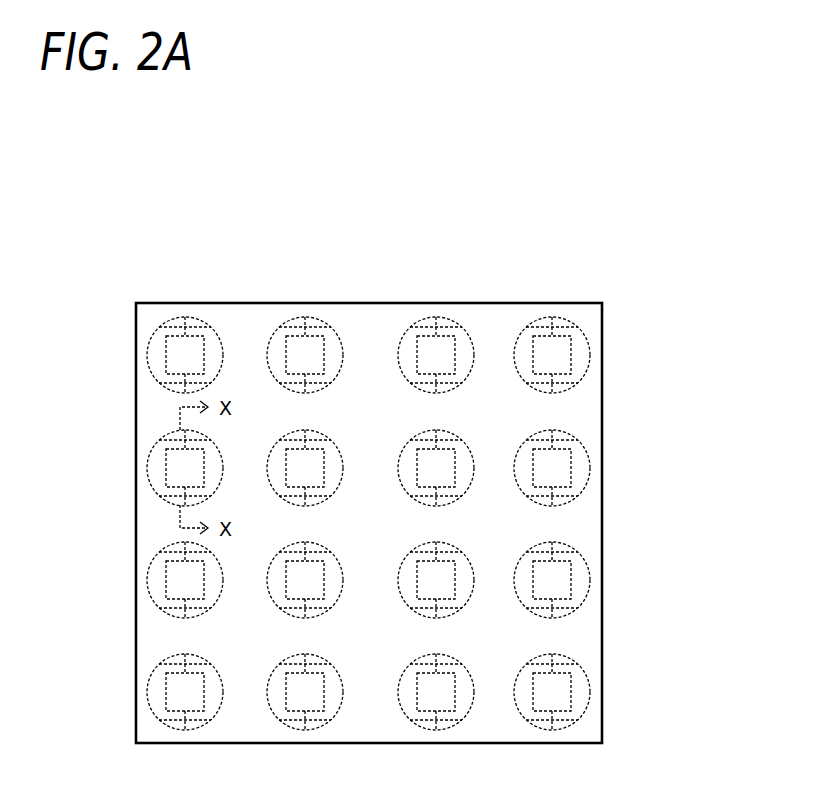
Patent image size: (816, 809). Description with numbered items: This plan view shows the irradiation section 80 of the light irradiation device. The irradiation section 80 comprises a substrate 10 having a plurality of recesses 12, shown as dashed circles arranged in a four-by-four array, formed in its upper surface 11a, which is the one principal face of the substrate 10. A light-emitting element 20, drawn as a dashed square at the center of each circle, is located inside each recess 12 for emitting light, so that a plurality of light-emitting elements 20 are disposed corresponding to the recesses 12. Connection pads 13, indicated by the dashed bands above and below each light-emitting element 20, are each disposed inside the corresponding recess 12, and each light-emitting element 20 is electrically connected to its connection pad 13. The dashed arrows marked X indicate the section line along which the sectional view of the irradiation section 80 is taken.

The substrate 10 is at (542, 302).
The upper surface 11a is at (217, 320).
The recess 12 is at (585, 338).
The connection pad 13 is at (173, 320).
The light-emitting element 20 is at (177, 353).
The irradiation section 80 is at (729, 252).